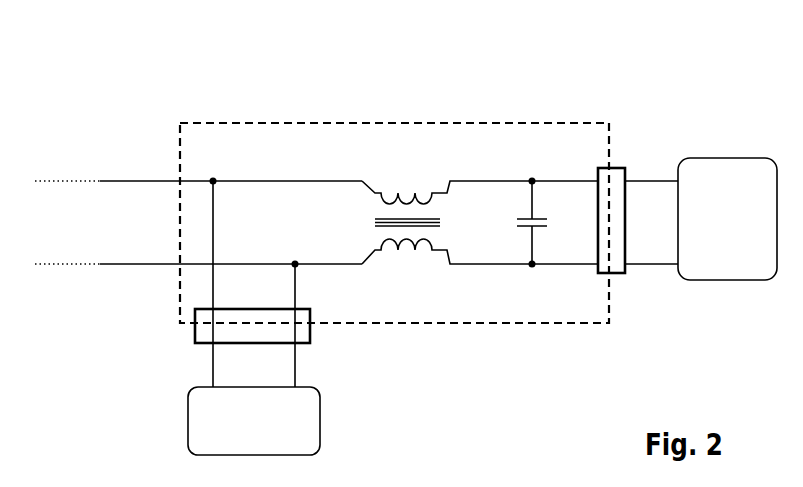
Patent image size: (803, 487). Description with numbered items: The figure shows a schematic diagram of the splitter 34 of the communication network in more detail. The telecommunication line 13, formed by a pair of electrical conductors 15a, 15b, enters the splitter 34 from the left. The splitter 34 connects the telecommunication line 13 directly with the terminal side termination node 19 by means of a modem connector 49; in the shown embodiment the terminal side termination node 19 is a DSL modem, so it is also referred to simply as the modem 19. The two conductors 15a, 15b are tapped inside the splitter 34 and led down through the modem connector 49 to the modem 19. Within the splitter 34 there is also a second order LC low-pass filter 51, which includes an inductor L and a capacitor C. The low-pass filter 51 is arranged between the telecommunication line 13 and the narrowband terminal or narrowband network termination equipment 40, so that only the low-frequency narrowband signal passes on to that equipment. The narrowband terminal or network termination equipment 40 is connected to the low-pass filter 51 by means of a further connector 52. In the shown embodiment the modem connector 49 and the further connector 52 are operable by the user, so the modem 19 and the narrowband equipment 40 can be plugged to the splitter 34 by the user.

The telecommunication line 13 is at (113, 90).
The electrical conductor 15a is at (135, 178).
The electrical conductor 15b is at (140, 262).
The splitter 34 is at (327, 122).
The second order LC low-pass filter 51 is at (494, 136).
The further connector 52 is at (615, 168).
The narrowband terminal or narrowband network termination equipment 40 is at (735, 158).
The modem connector 49 is at (193, 335).
The terminal side termination node 19 is at (318, 427).